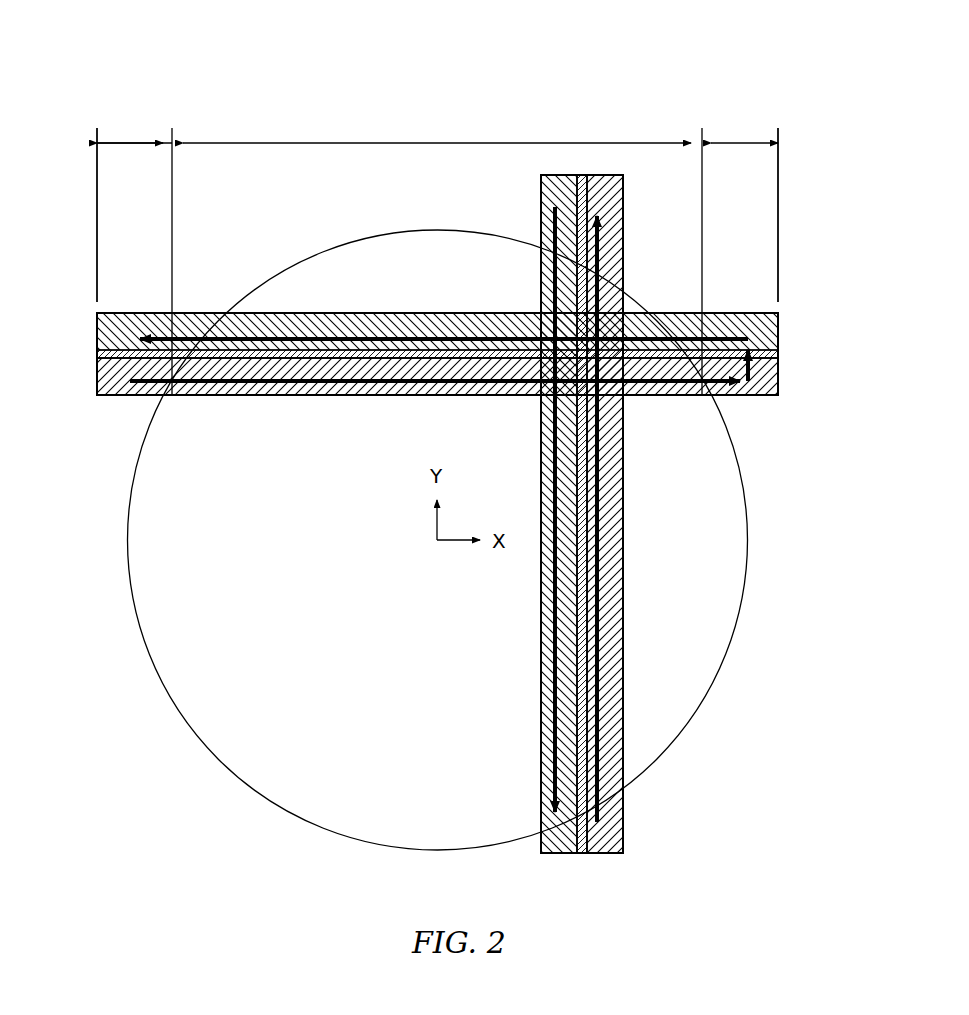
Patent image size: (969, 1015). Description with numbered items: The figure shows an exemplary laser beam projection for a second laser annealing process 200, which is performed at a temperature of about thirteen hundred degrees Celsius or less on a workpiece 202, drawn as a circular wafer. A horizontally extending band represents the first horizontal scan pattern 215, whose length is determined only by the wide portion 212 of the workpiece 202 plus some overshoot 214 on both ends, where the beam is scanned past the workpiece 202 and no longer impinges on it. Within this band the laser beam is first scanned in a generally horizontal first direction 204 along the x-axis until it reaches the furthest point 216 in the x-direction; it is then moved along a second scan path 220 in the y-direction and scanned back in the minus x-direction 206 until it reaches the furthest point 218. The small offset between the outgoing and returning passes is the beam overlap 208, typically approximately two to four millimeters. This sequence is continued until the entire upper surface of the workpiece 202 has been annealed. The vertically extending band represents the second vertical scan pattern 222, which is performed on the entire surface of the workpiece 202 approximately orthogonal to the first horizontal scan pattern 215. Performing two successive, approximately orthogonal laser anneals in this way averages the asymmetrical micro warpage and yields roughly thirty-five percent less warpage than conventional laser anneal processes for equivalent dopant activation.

The second laser annealing process 200 is at (684, 58).
The workpiece 202 is at (748, 540).
The first direction 204 is at (133, 400).
The minus x-direction 206 is at (97, 330).
The beam overlap 208 is at (787, 350).
The wide portion of the workpiece 212 is at (437, 143).
The overshoot 214 is at (135, 143).
The first horizontal scan pattern 215 is at (84, 378).
The furthest point in the x-direction 216 is at (778, 216).
The furthest point in the minus x-direction 218 is at (97, 213).
The second scan path 220 is at (750, 365).
The second vertical scan pattern 222 is at (528, 845).